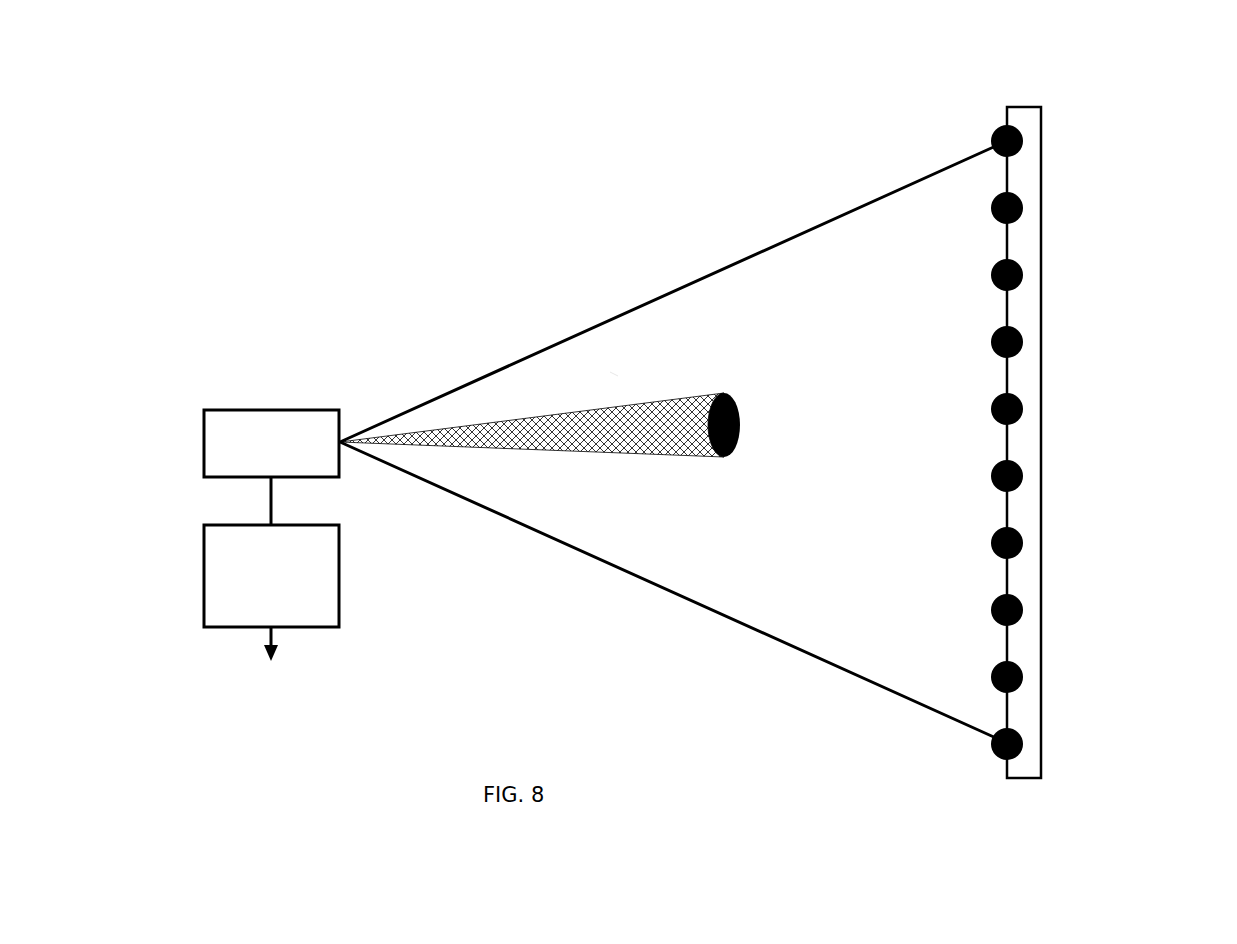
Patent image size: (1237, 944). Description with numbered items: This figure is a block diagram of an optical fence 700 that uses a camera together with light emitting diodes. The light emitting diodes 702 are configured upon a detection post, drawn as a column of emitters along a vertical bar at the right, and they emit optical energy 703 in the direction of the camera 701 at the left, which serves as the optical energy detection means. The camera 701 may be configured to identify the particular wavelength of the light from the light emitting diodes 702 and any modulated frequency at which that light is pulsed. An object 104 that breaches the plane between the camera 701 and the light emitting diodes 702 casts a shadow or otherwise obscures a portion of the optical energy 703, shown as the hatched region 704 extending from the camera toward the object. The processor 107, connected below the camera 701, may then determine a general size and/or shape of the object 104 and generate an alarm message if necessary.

The optical fence 700 is at (388, 158).
The camera 701 is at (271, 443).
The processor 107 is at (271, 602).
The light emitting diodes 702 is at (1023, 342).
The optical energy 703 is at (615, 373).
The beam 704 is at (607, 433).
The object 104 is at (723, 391).